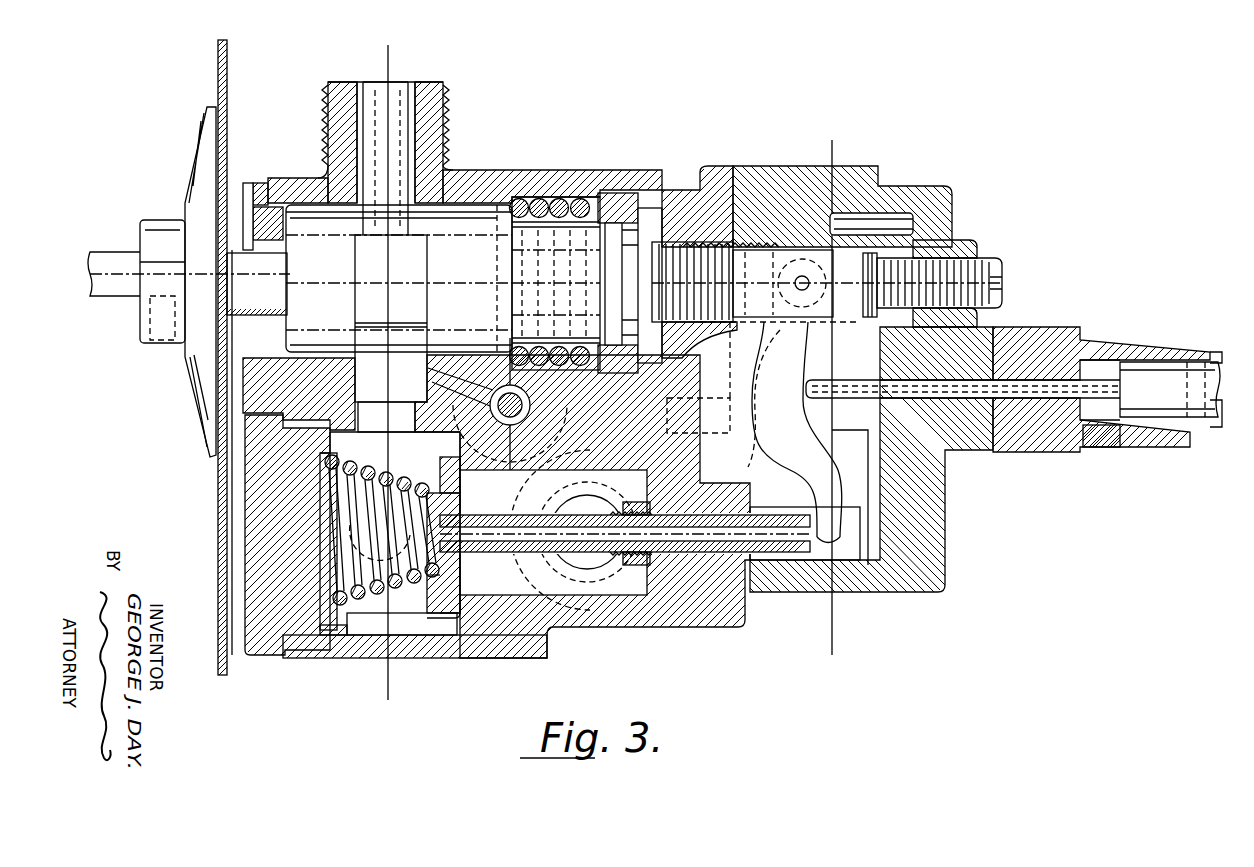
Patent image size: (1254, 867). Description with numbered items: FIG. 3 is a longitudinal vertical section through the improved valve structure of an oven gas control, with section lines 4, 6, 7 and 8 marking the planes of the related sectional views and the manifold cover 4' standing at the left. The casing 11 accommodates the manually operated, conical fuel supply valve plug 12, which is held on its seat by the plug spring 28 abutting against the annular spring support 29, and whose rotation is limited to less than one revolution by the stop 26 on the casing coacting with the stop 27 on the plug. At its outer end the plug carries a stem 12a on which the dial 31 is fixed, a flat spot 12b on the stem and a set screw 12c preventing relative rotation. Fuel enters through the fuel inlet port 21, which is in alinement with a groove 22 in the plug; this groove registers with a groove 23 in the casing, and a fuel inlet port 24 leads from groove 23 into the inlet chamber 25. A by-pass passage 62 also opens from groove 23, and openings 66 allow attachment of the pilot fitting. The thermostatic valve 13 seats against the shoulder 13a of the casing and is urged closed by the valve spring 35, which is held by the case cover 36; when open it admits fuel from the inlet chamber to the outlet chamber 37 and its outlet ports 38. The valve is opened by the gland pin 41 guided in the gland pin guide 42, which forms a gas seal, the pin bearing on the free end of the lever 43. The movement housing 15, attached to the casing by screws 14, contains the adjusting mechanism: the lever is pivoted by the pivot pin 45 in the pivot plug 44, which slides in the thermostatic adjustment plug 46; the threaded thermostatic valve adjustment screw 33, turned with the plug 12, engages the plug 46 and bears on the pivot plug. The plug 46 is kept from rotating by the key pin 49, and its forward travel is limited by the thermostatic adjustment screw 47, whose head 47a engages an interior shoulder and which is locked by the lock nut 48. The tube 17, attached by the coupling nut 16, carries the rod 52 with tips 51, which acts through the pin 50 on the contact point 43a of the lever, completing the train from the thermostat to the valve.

The section line 4— 4 is at (379, 375).
The manifold cover 4' is at (204, 357).
The section line 6— 6 is at (510, 338).
The section line 7— 7 is at (512, 283).
The section line 8— 8 is at (812, 140).
The casing 11 is at (322, 653).
The fuel supply valve plug 12 is at (474, 210).
The stem 12a is at (122, 297).
The flat spot 12b is at (142, 300).
The set screw 12c is at (150, 331).
The thermostatic valve 13 is at (440, 602).
The shoulder or seat 13a is at (458, 618).
The screws 14 is at (740, 440).
The movement housing 15 is at (922, 596).
The coupling nut 16 is at (1110, 450).
The tube 17 is at (1196, 352).
The fuel inlet port 21 is at (400, 92).
The groove 22 is at (412, 268).
The groove 23 is at (300, 393).
The fuel inlet port 24 is at (396, 432).
The inlet chamber 25 is at (370, 434).
The stop 26 is at (262, 183).
The stop 27 is at (243, 238).
The plug spring 28 is at (540, 200).
The annular spring support 29 is at (612, 198).
The dial 31 is at (205, 125).
The thermostatic valve adjustment screw 33 is at (650, 285).
The valve spring 35 is at (352, 590).
The case cover 36 is at (262, 652).
The outlet chamber 37 is at (481, 590).
The outlet ports 38 is at (610, 560).
The gland pin 41 is at (500, 541).
The gland pin guide 42 is at (524, 545).
The lever 43 is at (815, 466).
The contact point 43a is at (800, 365).
The pivot plug 44 is at (786, 250).
The pivot pin 45 is at (802, 291).
The thermostatic adjustment plug 46 is at (750, 218).
The thermostatic adjustment screw 47 is at (980, 262).
The head 47a is at (869, 317).
The lock nut 48 is at (958, 243).
The key pin 49 is at (900, 213).
The pin 50 is at (980, 398).
The tips 51 is at (1133, 405).
The rod 52 is at (1218, 427).
The passage 62 is at (430, 376).
The openings 66 is at (434, 580).